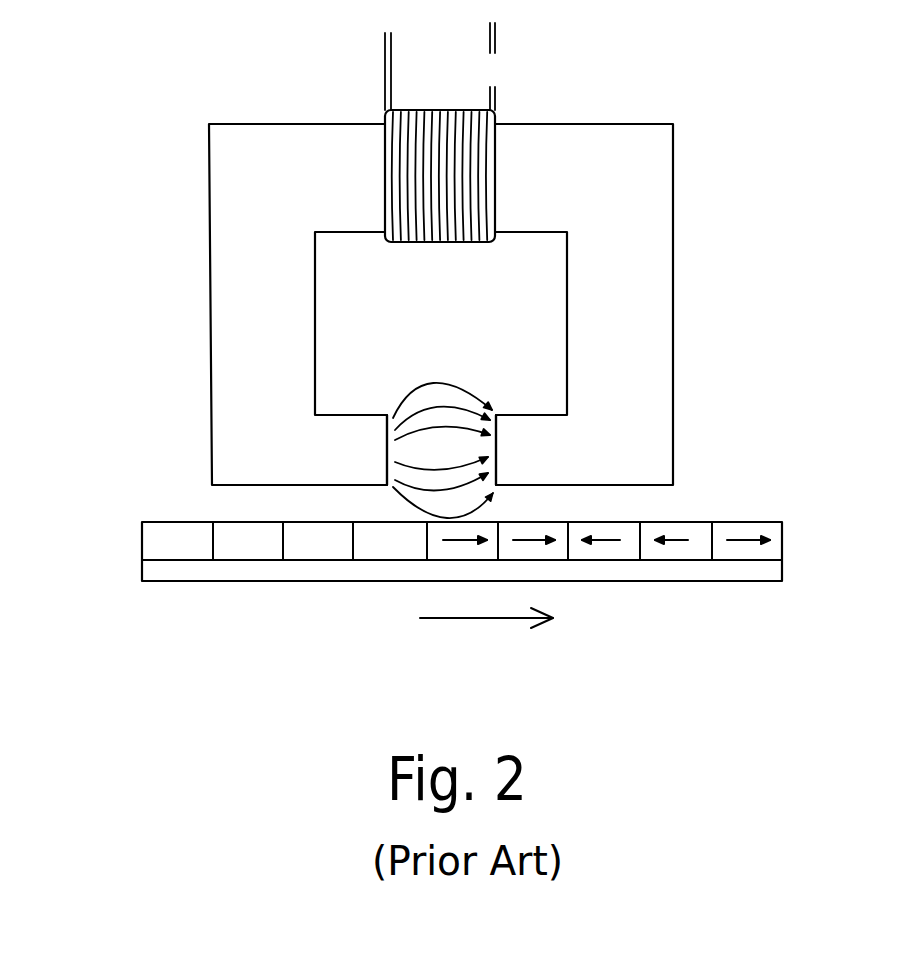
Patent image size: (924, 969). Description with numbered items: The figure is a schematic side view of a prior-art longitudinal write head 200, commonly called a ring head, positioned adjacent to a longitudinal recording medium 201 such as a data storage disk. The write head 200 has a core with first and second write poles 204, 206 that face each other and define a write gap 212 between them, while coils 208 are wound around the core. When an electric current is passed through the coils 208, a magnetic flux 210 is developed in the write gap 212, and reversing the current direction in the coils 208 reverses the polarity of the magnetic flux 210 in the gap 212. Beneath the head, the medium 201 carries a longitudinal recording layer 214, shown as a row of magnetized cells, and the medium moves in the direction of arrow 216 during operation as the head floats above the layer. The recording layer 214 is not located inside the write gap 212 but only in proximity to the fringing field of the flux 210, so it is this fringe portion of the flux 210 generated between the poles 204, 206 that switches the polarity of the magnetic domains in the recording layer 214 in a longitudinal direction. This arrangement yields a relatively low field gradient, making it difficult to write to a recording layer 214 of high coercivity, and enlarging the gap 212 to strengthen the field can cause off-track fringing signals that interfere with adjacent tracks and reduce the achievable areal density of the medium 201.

The write head 200 is at (558, 304).
The longitudinal recording medium 201 is at (520, 520).
The first write pole 204 is at (537, 412).
The second write pole 206 is at (345, 412).
The coils 208 is at (440, 108).
The magnetic flux 210 is at (483, 511).
The write gap 212 is at (455, 458).
The longitudinal recording layer 214 is at (783, 538).
The arrow 216 is at (443, 630).